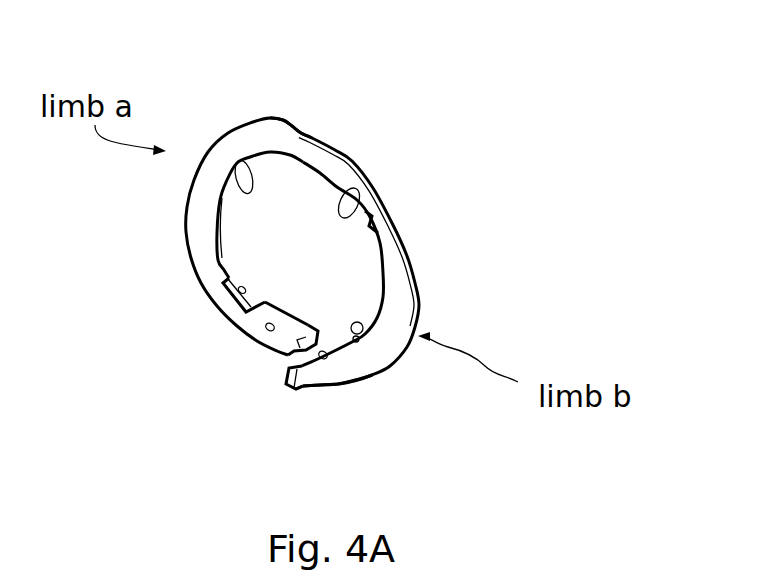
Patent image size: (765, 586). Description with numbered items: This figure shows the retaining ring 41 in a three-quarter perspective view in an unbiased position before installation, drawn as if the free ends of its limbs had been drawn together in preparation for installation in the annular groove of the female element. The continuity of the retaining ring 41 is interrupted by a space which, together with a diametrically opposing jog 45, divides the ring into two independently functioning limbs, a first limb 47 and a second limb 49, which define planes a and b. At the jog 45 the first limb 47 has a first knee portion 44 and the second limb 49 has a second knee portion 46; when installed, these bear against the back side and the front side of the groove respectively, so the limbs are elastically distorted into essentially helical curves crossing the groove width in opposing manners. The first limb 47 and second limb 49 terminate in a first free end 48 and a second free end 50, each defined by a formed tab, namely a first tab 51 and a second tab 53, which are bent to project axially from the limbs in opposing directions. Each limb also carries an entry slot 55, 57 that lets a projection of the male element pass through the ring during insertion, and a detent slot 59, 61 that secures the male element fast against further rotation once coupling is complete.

The retaining ring 41 is at (188, 283).
The first knee portion 44 is at (283, 118).
The jog 45 is at (306, 116).
The second knee portion 46 is at (310, 136).
The first limb 47 is at (233, 145).
The first free end 48 is at (293, 300).
The second limb 49 is at (420, 318).
The second free end 50 is at (333, 398).
The first tab 51 is at (318, 328).
The second tab 53 is at (284, 386).
The entry slot 55 is at (216, 293).
The entry slot 57 is at (350, 192).
The detent slot 59 is at (238, 195).
The detent slot 61 is at (364, 331).